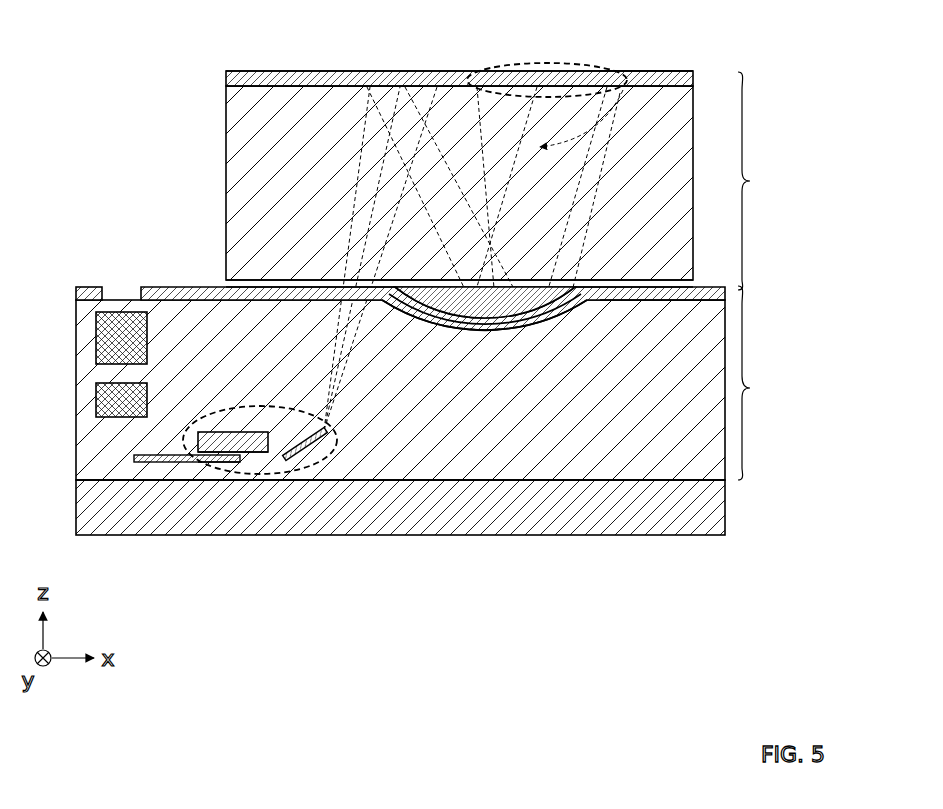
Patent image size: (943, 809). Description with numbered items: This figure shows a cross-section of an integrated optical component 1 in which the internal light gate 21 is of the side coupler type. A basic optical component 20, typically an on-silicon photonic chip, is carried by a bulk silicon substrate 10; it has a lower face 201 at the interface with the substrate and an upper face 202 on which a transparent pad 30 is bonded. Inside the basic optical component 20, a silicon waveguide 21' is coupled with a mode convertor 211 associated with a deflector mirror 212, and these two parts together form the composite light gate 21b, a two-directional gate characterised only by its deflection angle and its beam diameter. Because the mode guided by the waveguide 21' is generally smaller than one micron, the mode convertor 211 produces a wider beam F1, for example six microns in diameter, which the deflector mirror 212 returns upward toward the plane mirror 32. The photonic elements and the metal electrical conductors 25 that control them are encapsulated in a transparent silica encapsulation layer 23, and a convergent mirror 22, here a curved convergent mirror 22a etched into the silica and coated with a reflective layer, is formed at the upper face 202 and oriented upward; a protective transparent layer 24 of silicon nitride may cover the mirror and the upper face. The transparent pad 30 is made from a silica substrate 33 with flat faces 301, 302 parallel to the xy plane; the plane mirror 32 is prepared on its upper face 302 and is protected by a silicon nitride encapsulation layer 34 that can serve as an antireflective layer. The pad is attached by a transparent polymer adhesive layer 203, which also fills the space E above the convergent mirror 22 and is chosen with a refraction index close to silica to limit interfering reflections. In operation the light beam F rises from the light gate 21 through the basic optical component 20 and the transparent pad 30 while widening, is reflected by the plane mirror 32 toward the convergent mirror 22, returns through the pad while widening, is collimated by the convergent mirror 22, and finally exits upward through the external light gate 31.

The integrated optical component 1 is at (110, 55).
The substrate 10 is at (90, 505).
The basic optical component 20 is at (441, 439).
The lower face 201 is at (354, 481).
The upper face 202 is at (203, 287).
The adhesive layer 203 is at (240, 286).
The internal light gate 21 is at (238, 512).
The light gate 21b is at (240, 536).
The waveguide 21' is at (184, 523).
The mode convertor 211 is at (208, 463).
The deflector mirror 212 is at (315, 461).
The convergent mirror 22 is at (517, 325).
The curved convergent mirror 22a is at (484, 460).
The encapsulation layer 23 is at (597, 388).
The protective transparent layer 24 is at (683, 300).
The metal electrical conductors 25 is at (96, 393).
The transparent pad 30 is at (447, 220).
The flat face 301 is at (297, 280).
The upper face 302 is at (297, 88).
The external light gate 31 is at (483, 72).
The plane mirror 32 is at (370, 72).
The silica substrate 33 is at (243, 112).
The transparent encapsulation layer 34 is at (673, 71).
The space E is at (457, 331).
The light beam F is at (633, 70).
The beam F1 is at (183, 441).